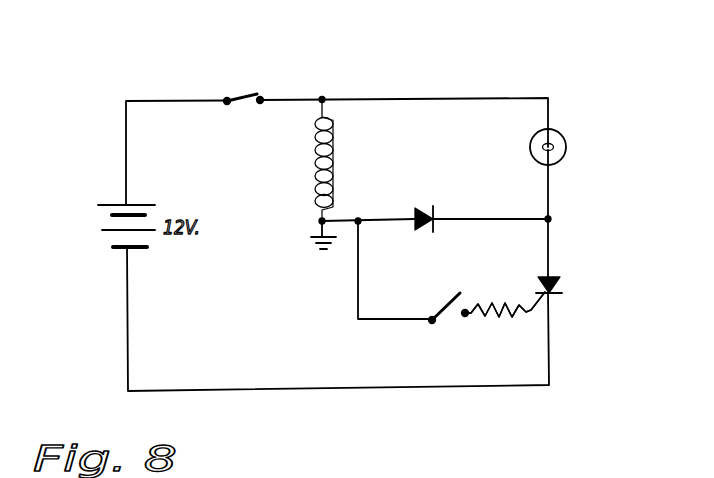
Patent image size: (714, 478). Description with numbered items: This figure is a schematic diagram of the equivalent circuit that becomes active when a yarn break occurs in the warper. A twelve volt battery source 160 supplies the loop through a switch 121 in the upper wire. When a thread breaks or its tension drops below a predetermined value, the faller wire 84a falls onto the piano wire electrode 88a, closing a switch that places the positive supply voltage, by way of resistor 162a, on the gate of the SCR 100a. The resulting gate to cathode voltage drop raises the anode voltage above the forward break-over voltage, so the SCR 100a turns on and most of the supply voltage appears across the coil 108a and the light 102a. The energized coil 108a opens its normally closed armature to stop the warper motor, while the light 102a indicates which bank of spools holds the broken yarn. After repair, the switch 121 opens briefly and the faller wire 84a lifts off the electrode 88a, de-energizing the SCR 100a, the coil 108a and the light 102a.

The switch 121 is at (257, 93).
The coil 108a is at (420, 152).
The light 102a is at (653, 141).
The battery 160 is at (104, 225).
The SCR 100a is at (655, 279).
The faller wire 84a is at (447, 312).
The piano wire electrode 88a is at (525, 277).
The resistor 162a is at (535, 357).